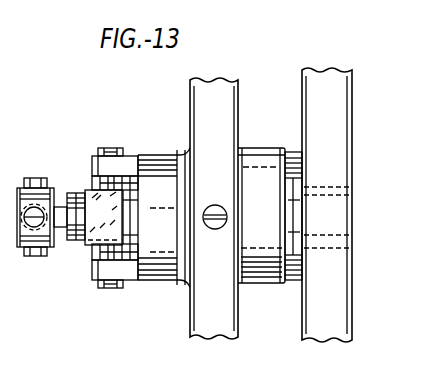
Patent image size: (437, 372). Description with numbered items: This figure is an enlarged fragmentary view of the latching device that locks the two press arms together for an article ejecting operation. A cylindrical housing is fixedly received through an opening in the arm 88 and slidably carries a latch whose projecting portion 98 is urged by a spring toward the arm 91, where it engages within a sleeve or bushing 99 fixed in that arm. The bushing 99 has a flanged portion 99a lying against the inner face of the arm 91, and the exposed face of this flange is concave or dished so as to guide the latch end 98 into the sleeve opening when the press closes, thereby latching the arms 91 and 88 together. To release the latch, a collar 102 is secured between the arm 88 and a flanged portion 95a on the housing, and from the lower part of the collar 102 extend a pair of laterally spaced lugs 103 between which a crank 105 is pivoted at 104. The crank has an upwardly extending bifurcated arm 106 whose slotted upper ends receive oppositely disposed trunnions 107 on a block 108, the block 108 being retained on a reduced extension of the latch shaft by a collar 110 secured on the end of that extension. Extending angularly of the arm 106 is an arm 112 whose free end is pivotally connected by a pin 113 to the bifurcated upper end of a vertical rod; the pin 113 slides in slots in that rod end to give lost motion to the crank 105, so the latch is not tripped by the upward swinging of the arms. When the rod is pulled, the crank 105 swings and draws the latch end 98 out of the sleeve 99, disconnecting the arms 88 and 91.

The arm 88 is at (218, 88).
The arm 91 is at (330, 78).
The flanged portion 95a is at (148, 272).
The projecting portion 98 is at (290, 220).
The sleeve or bushing 99 is at (347, 186).
The flanged portion 99a is at (295, 152).
The collar 102 is at (162, 165).
The lugs 103 is at (120, 165).
The pivot 104 is at (108, 288).
The crank 105 is at (63, 238).
The bifurcated arm 106 is at (93, 183).
The trunnions 107 is at (130, 183).
The block 108 is at (118, 211).
The collar 110 is at (76, 243).
The arm 112 is at (57, 208).
The pin 113 is at (35, 180).